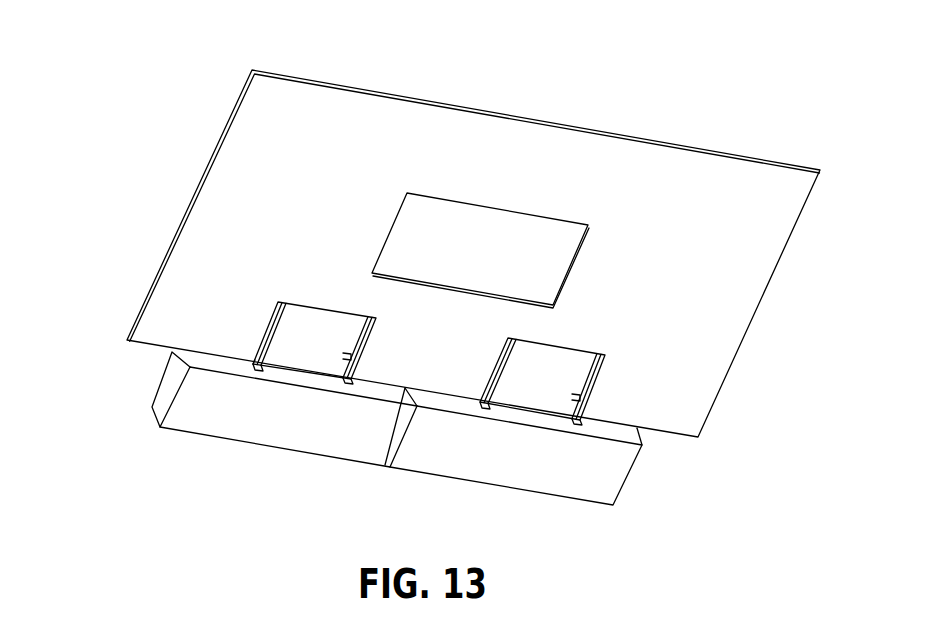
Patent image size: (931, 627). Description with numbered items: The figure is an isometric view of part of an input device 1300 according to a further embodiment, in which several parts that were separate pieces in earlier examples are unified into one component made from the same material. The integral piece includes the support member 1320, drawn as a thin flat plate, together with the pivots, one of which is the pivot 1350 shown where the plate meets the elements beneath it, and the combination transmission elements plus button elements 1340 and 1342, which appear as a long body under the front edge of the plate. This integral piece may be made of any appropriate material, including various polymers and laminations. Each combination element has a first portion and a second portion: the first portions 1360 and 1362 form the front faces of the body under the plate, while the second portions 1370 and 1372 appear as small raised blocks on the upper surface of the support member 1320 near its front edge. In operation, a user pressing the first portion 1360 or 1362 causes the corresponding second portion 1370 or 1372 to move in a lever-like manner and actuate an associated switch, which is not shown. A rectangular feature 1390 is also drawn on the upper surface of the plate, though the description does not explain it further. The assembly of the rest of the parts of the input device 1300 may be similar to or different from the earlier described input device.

The input device 1300 is at (210, 82).
The support member 1320 is at (253, 190).
The recess / window 1390 is at (478, 245).
The second portion 1370 is at (314, 405).
The second portion 1372 is at (542, 440).
The pivot 1350 is at (252, 353).
The combination transmission element plus button element 1340 is at (192, 407).
The combination transmission element plus button element 1342 is at (607, 473).
The first portion 1360 is at (285, 418).
The first portion 1362 is at (510, 462).